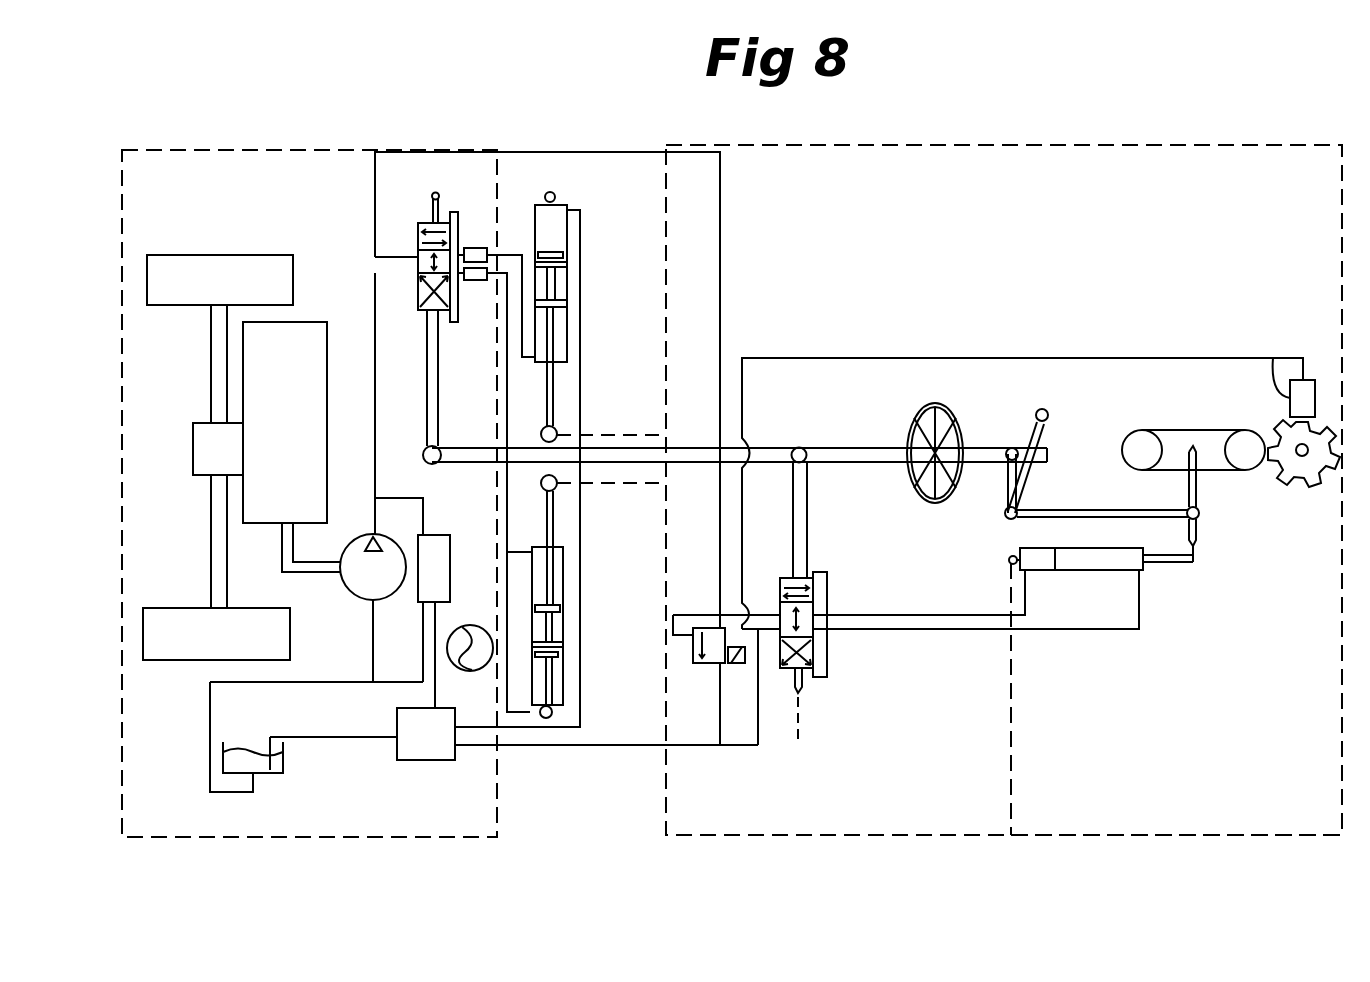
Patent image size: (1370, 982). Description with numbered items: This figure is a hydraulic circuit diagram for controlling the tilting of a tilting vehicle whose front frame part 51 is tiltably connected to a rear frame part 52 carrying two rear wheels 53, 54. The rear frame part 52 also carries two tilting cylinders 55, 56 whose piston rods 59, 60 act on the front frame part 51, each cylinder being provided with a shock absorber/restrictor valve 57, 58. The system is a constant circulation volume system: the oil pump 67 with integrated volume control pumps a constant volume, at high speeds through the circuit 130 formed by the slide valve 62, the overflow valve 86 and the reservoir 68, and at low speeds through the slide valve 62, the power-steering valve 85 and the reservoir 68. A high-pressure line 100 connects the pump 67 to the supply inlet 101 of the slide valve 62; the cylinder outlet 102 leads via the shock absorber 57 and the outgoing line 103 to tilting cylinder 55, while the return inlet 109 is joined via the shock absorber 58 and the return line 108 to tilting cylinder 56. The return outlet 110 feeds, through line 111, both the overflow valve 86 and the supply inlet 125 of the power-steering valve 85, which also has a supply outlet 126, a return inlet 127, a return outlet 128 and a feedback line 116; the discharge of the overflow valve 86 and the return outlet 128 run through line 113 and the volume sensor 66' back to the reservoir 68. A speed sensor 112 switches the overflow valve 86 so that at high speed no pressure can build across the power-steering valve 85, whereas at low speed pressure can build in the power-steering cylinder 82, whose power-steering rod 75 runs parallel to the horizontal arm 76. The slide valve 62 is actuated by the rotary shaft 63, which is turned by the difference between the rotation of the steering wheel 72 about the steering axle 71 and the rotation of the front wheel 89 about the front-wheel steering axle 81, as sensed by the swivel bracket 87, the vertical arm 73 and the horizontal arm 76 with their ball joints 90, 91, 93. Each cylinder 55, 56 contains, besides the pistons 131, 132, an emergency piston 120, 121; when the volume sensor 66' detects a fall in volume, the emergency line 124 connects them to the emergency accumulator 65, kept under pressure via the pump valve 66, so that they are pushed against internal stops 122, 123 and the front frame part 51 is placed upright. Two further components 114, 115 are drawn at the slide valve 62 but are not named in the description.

The front frame part 51 is at (1158, 815).
The rear frame part 52 is at (205, 165).
The rear wheel 53 is at (190, 648).
The rear wheel 54 is at (283, 277).
The tilting cylinder 55 is at (530, 618).
The tilting cylinder 56 is at (568, 227).
The shock absorber/restrictor valve 57 is at (475, 281).
The shock absorber/restrictor valve 58 is at (473, 247).
The piston rod 59 is at (547, 537).
The piston rod 60 is at (547, 412).
The slide valve 62 is at (418, 240).
The rotary shaft 63 is at (833, 448).
The emergency pressure accumulator 65 is at (452, 628).
The pump valve 66 is at (449, 552).
The volume sensor 66' is at (428, 755).
The oil pump with integrated volume control 67 is at (365, 583).
The reservoir 68 is at (267, 765).
The steering axle 71 is at (978, 447).
The steering wheel 72 is at (933, 403).
The vertical arm 73 is at (1037, 467).
The power-steering rod 75 is at (1172, 563).
The horizontal arm 76 is at (1108, 510).
The front-wheel steering axle 81 is at (1192, 446).
The power-steering cylinder 82 is at (1033, 558).
The power-steering valve 85 is at (803, 578).
The overflow valve 86 is at (713, 665).
The swivel bracket 87 is at (1007, 445).
The front wheel 89 is at (1178, 438).
The ball joint 90 is at (1200, 516).
The ball joint 91 is at (1008, 518).
The ball joint 93 is at (1048, 417).
The high-pressure line 100 is at (380, 392).
The supply inlet 101 is at (415, 273).
The cylinder outlet 102 is at (430, 332).
The outgoing line 103 is at (503, 425).
The return line 108 is at (522, 250).
The return inlet 109 is at (457, 232).
The return outlet 110 is at (418, 258).
The line 111 is at (720, 258).
The speed sensor 112 is at (1274, 355).
The line 113 is at (648, 745).
The valve stem 114 is at (436, 192).
The valve housing 115 is at (457, 322).
The feedback line 116 is at (828, 650).
The emergency piston 120 is at (563, 252).
The emergency piston 121 is at (552, 657).
The internal stop 122 is at (563, 264).
The internal stop 123 is at (562, 641).
The emergency line 124 is at (582, 312).
The supply inlet 125 is at (780, 613).
The supply outlet 126 is at (817, 610).
The return inlet 127 is at (813, 625).
The return outlet 128 is at (780, 650).
The circuit 130 is at (697, 215).
The piston 131 is at (553, 327).
The piston 132 is at (558, 608).